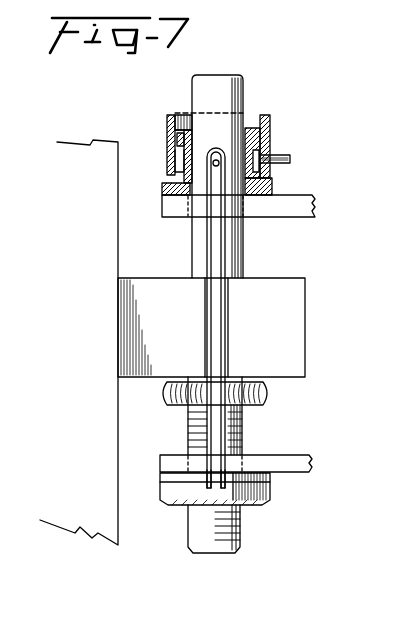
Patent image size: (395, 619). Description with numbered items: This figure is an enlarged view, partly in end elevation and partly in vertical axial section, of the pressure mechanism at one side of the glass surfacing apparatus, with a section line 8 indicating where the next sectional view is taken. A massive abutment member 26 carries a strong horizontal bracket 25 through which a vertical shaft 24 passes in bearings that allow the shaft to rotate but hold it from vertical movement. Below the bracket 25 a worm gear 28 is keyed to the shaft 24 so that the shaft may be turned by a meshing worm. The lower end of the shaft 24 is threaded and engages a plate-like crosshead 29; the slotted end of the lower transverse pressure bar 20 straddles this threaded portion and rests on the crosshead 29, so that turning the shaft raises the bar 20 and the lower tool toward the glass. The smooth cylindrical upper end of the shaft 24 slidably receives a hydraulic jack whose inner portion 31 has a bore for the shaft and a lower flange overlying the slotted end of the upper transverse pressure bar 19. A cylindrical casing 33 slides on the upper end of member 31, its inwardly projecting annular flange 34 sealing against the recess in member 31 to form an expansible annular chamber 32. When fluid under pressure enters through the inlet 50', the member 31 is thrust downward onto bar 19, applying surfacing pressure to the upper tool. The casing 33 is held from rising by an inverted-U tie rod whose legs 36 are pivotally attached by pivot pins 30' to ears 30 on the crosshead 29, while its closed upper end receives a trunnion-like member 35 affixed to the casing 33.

The section line 8- 8 is at (105, 79).
The upper transverse pressure bar 19 is at (272, 208).
The lower transverse pressure bar 20 is at (271, 462).
The shaft 24 is at (234, 77).
The bracket 25 is at (166, 278).
The abutment member 26 is at (119, 390).
The worm gear 28 is at (263, 397).
The crosshead 29 is at (268, 500).
The ear 30 is at (190, 510).
The pivot pin 30' is at (172, 500).
The inner portion of hydraulic jack 31 is at (262, 190).
The annular chamber 32 is at (169, 153).
The cylindrical casing 33 is at (168, 117).
The annular flange 34 is at (178, 137).
The trunnion-like member 35 is at (219, 161).
The tie rod leg 36 is at (209, 356).
The inlet 50' is at (296, 149).